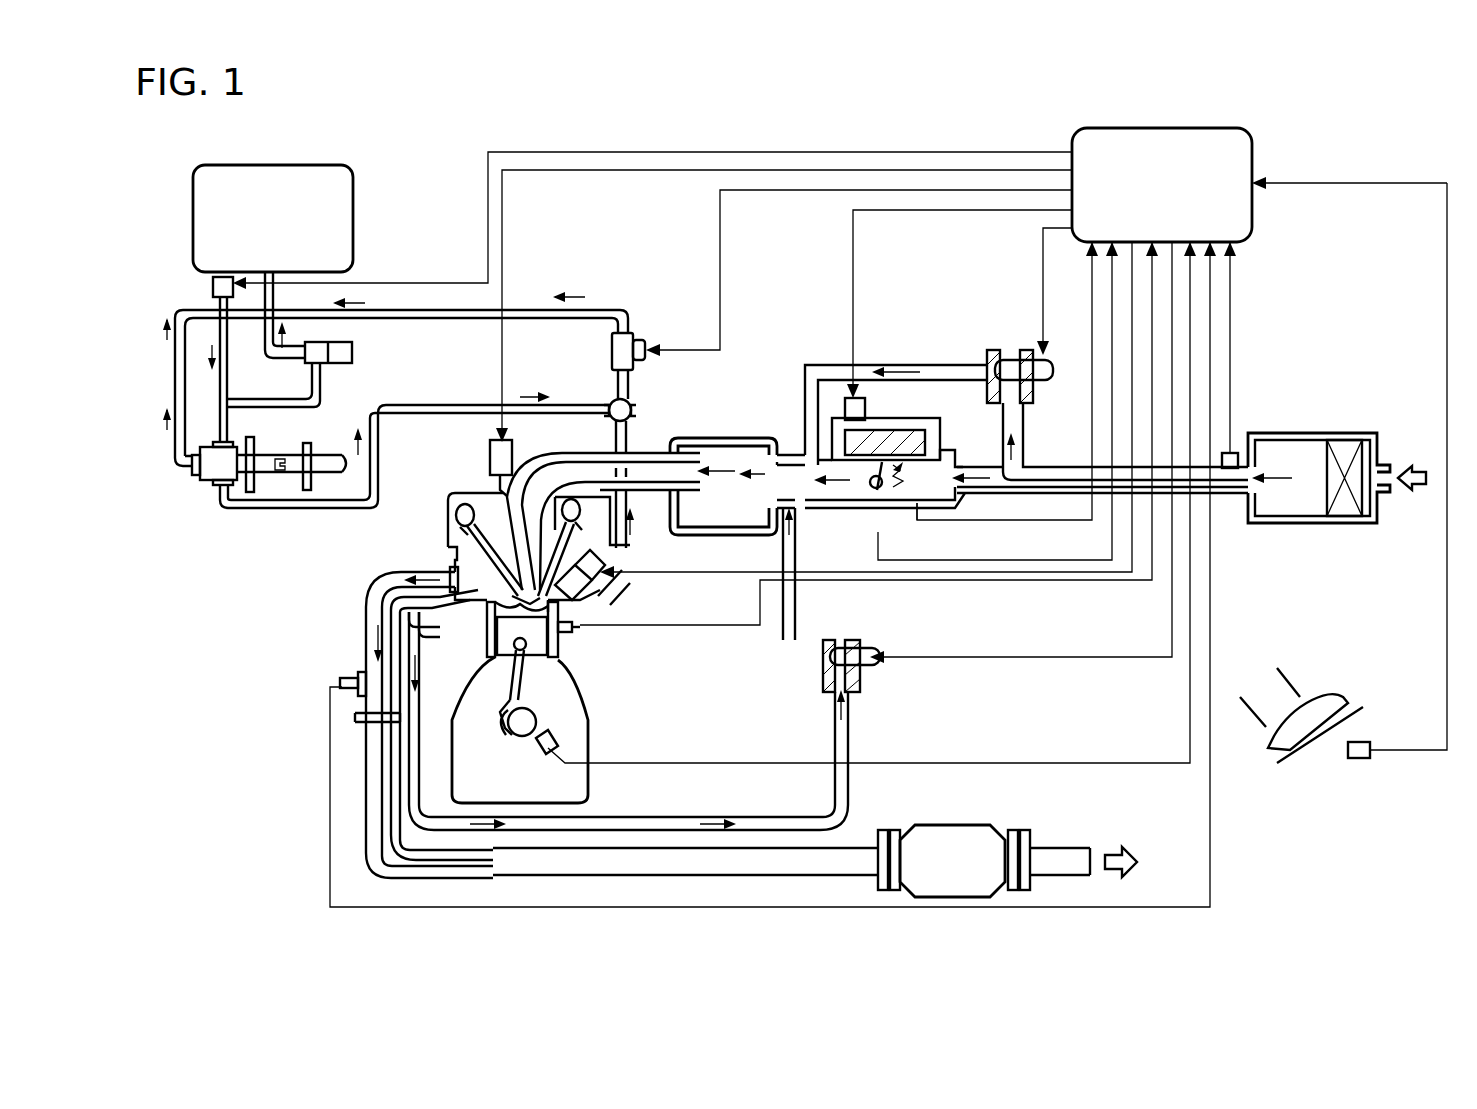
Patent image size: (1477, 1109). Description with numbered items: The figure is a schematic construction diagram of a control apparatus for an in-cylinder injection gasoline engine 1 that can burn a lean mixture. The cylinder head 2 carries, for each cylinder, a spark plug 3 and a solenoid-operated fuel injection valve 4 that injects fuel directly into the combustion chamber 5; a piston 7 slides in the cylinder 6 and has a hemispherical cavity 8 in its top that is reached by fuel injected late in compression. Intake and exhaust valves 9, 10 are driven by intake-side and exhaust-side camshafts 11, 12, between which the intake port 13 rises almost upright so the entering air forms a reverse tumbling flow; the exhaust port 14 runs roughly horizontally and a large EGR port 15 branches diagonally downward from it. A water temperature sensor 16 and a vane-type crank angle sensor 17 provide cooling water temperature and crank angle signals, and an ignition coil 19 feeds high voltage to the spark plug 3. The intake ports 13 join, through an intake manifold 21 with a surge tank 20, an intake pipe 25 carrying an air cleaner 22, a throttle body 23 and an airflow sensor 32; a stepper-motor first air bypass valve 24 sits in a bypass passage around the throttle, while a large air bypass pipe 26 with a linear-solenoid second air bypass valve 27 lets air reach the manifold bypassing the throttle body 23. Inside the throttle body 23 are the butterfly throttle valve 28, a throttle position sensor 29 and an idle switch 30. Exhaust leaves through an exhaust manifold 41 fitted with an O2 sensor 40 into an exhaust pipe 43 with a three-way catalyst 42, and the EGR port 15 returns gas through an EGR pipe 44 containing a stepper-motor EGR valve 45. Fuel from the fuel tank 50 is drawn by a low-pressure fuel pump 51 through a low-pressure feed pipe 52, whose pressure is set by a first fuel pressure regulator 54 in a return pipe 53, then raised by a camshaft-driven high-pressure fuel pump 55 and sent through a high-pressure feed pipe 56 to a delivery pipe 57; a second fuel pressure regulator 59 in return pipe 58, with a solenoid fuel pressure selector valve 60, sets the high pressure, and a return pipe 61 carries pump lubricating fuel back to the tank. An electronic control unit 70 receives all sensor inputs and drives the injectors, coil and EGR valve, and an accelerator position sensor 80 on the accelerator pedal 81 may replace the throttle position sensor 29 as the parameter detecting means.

The engine 1 is at (615, 712).
The cylinder head 2 is at (470, 495).
The spark plug 3 is at (490, 580).
The fuel injection valve 4 is at (600, 590).
The combustion chamber 5 is at (495, 605).
The cylinder 6 is at (580, 668).
The piston 7 is at (487, 650).
The hemispherical cavity 8 is at (575, 605).
The intake valve 9 is at (608, 572).
The exhaust valve 10 is at (460, 530).
The intake-side camshaft 11 is at (590, 505).
The exhaust-side camshaft 12 is at (360, 448).
The intake port 13 is at (512, 490).
The exhaust port 14 is at (450, 575).
The EGR port 15 is at (364, 600).
The water temperature sensor 16 is at (580, 635).
The crank angle sensor 17 is at (560, 740).
The ignition coil 19 is at (495, 435).
The surge tank 20 is at (728, 447).
The intake manifold 21 is at (650, 452).
The air cleaner 22 is at (1340, 438).
The throttle body 23 is at (855, 512).
The first air bypass valve 24 is at (866, 410).
The intake pipe 25 is at (1030, 455).
The air bypass pipe 26 is at (935, 362).
The second air bypass valve 27 is at (1003, 345).
The throttle valve 28 is at (860, 507).
The throttle position sensor 29 is at (930, 495).
The idle switch 30 is at (878, 495).
The airflow sensor 32 is at (1232, 495).
The O2 sensor 40 is at (345, 672).
The exhaust manifold 41 is at (365, 612).
The three-way catalyst 42 is at (952, 830).
The exhaust pipe 43 is at (840, 845).
The EGR pipe 44 is at (830, 792).
The EGR valve 45 is at (872, 688).
The fuel tank 50 is at (355, 195).
The low-pressure fuel pump 51 is at (212, 285).
The low-pressure feed pipe 52 is at (228, 430).
The return pipe 53 is at (322, 380).
The first fuel pressure regulator 54 is at (352, 350).
The high-pressure fuel pump 55 is at (200, 485).
The high-pressure feed pipe 56 is at (258, 508).
The delivery pipe 57 is at (632, 404).
The return pipe 58 is at (518, 300).
The second fuel pressure regulator 59 is at (610, 345).
The fuel pressure selector valve 60 is at (645, 336).
The return pipe 61 is at (173, 392).
The electronic control unit 70 is at (1252, 150).
The accelerator position sensor 80 is at (1362, 760).
The accelerator pedal 81 is at (1356, 700).